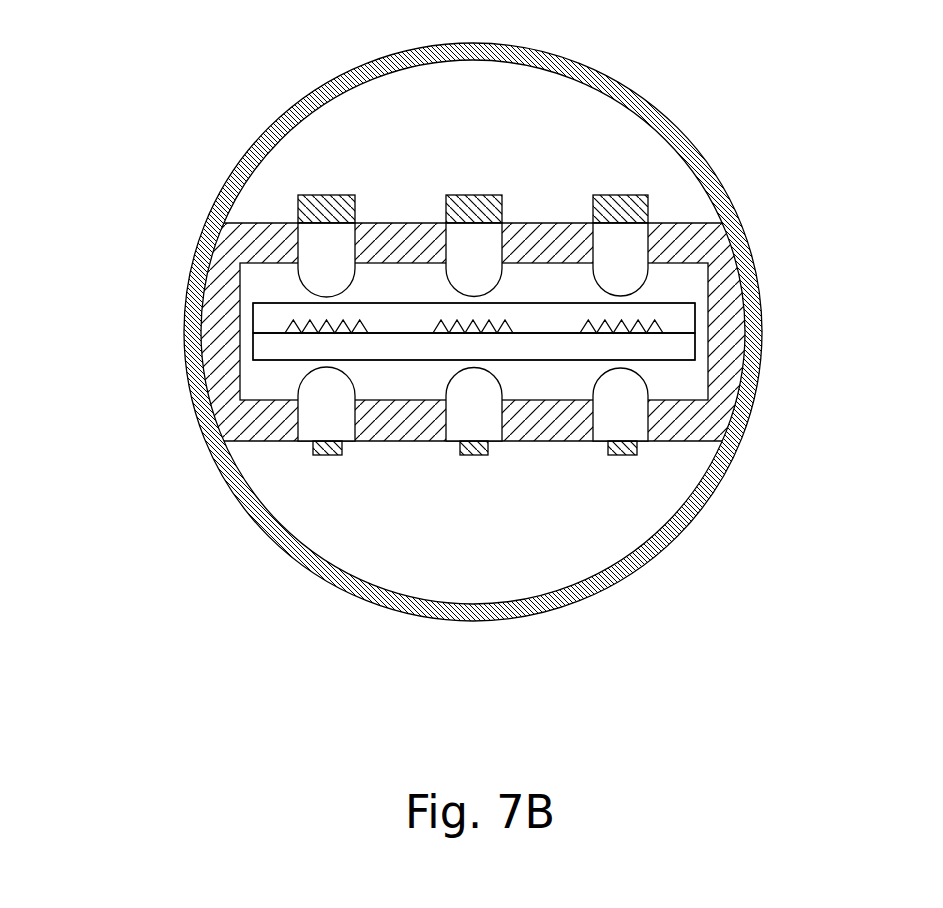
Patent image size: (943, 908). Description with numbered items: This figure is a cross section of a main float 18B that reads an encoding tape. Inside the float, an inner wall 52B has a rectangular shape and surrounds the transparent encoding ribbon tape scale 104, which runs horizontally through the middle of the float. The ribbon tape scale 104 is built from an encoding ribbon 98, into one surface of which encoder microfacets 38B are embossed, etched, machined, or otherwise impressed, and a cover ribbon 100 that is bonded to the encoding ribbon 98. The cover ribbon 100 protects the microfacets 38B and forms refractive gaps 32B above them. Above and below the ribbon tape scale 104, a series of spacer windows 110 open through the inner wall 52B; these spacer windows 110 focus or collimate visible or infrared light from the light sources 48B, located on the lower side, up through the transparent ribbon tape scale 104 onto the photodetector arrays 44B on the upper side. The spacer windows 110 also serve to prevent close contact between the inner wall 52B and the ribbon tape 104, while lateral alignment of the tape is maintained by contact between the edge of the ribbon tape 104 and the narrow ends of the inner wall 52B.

The main float 18B is at (597, 70).
The refractive gaps 32B is at (312, 335).
The encoder microfacets 38B is at (307, 330).
The photodetector arrays 44B is at (625, 195).
The light sources 48B is at (620, 455).
The inner wall 52B is at (708, 425).
The encoding ribbon 98 is at (678, 318).
The cover ribbon 100 is at (683, 343).
The transparent encoding ribbon tape scale 104 is at (253, 345).
The spacer windows 110 is at (325, 249).